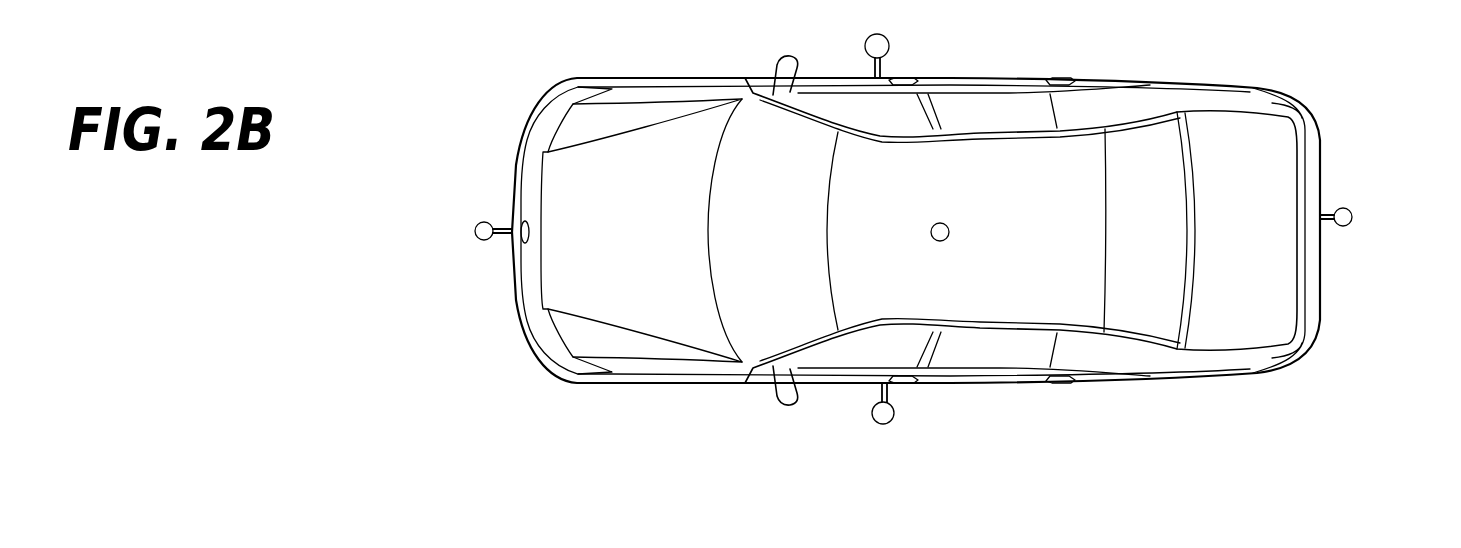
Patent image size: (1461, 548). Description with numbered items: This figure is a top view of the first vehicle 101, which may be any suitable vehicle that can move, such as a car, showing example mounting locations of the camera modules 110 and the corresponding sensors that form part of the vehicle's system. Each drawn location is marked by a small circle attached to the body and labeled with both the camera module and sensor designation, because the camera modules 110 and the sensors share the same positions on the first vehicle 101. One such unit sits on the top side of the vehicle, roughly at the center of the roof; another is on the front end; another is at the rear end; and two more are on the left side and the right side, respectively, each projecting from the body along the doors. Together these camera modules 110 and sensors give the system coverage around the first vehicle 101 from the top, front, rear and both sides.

The first vehicle 101 is at (882, 224).
The camera modules 110 is at (882, 226).